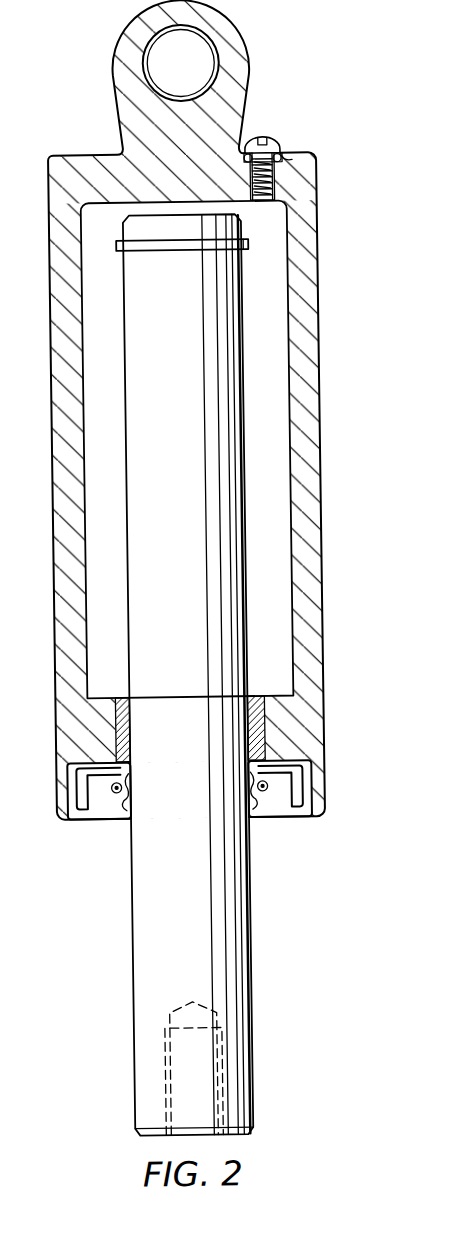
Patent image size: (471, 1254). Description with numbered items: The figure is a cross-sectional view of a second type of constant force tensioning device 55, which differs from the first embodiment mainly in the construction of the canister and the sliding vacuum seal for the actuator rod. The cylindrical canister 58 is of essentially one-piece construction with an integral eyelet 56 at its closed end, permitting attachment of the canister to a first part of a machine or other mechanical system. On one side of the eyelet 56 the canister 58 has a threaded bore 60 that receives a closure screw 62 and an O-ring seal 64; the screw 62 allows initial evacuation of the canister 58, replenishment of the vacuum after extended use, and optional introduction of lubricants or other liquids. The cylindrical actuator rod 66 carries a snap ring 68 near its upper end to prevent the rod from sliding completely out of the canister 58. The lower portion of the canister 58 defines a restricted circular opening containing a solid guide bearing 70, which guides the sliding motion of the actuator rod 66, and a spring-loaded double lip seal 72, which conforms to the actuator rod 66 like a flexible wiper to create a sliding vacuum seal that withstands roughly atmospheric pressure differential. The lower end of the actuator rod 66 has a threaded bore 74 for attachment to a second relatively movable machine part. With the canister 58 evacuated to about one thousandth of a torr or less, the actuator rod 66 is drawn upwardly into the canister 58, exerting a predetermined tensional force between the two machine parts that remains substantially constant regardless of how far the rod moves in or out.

The constant force tensioning device 55 is at (84, 118).
The eyelet 56 is at (238, 48).
The canister 58 is at (316, 381).
The threaded bore 60 is at (272, 198).
The closure screw 62 is at (268, 138).
The O-ring seal 64 is at (288, 160).
The actuator rod 66 is at (191, 498).
The snap ring 68 is at (250, 247).
The guide bearing 70 is at (252, 717).
The double lip seal 72 is at (253, 809).
The threaded bore 74 is at (210, 1077).